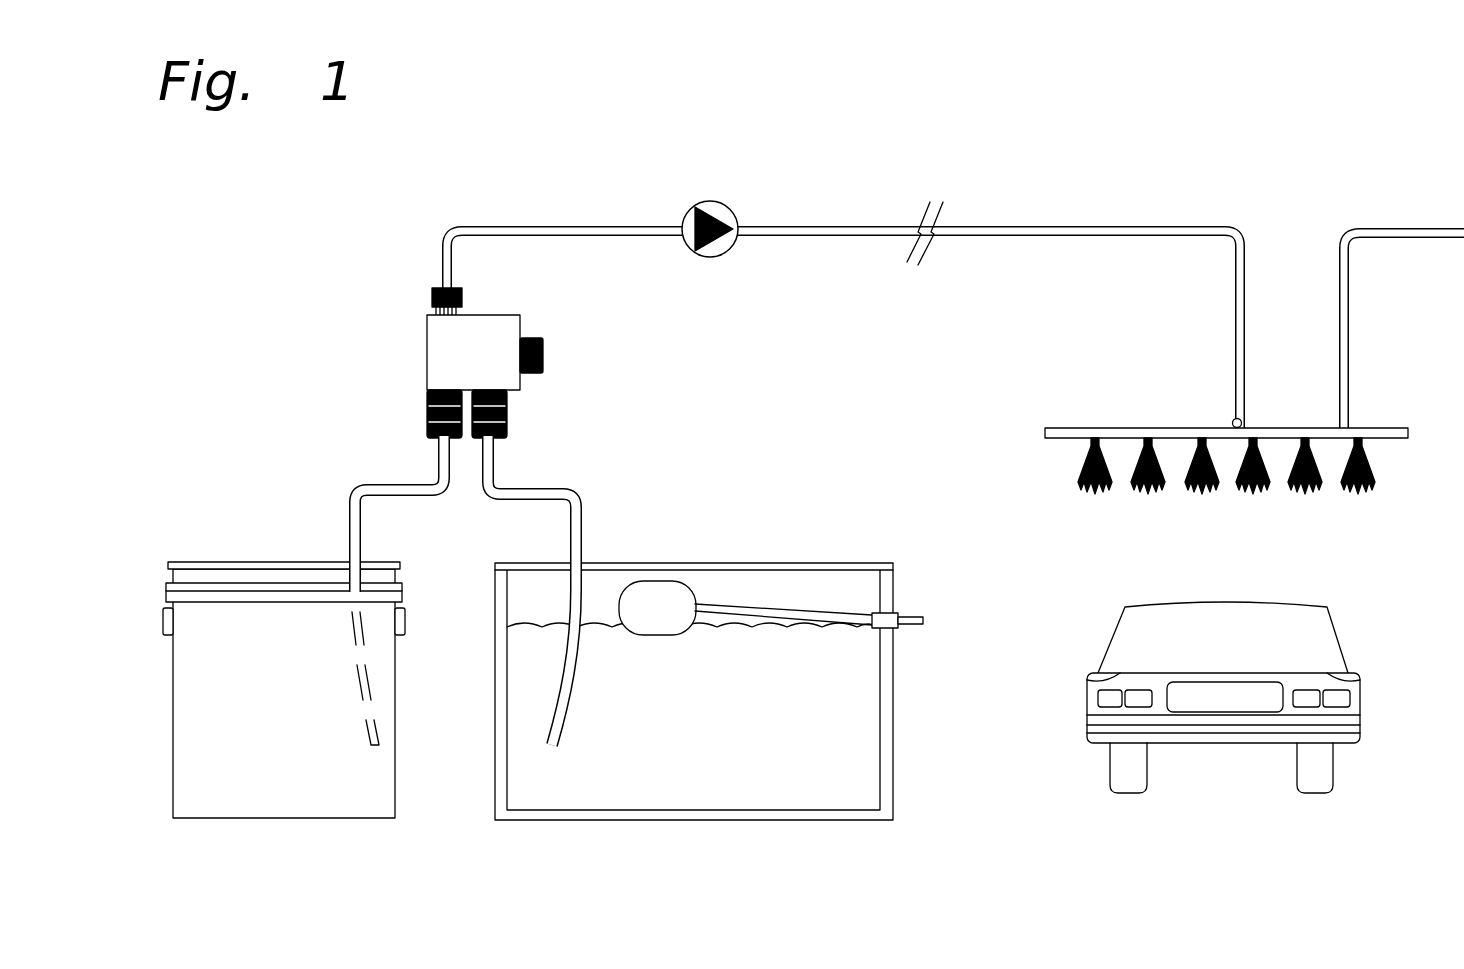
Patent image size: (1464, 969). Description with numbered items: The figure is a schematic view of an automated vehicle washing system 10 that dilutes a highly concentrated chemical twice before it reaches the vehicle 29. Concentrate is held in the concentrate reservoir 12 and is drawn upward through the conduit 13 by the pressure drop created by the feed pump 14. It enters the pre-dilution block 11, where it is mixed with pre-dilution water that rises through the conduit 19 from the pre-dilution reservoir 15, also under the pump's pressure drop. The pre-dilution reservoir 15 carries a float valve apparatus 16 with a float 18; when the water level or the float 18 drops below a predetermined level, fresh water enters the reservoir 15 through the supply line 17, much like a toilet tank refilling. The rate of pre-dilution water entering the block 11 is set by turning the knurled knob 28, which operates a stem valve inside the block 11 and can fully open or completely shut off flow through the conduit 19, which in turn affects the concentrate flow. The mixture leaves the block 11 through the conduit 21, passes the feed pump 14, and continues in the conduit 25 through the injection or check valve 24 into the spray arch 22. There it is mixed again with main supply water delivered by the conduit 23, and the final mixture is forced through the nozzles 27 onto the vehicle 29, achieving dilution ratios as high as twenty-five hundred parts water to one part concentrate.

The system 10 is at (352, 242).
The pre-dilution block 11 is at (427, 355).
The concentrate reservoir 12 is at (252, 841).
The conduit 13 is at (358, 493).
The feed pump 14 is at (720, 203).
The pre-dilution reservoir 15 is at (614, 843).
The float valve apparatus 16 is at (803, 594).
The supply line 17 is at (925, 624).
The float 18 is at (662, 581).
The conduit 19 is at (556, 493).
The conduit 21 is at (531, 226).
The spray arch 22 is at (1053, 428).
The conduit 23 is at (1353, 228).
The injection or check valve 24 is at (1232, 420).
The conduit 25 is at (857, 238).
The nozzles 27 is at (1133, 500).
The knurled knob 28 is at (543, 360).
The vehicle 29 is at (1282, 603).